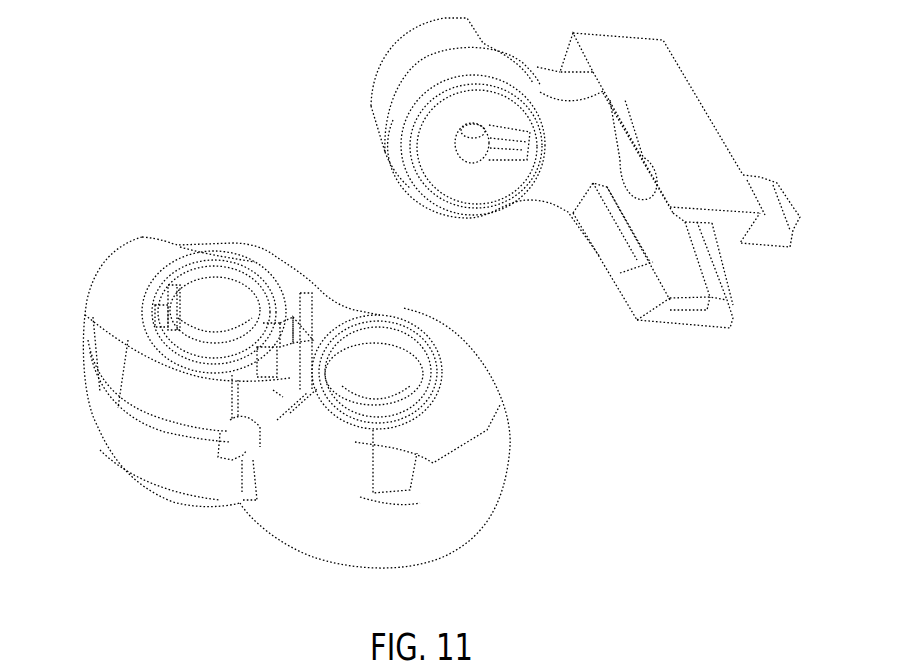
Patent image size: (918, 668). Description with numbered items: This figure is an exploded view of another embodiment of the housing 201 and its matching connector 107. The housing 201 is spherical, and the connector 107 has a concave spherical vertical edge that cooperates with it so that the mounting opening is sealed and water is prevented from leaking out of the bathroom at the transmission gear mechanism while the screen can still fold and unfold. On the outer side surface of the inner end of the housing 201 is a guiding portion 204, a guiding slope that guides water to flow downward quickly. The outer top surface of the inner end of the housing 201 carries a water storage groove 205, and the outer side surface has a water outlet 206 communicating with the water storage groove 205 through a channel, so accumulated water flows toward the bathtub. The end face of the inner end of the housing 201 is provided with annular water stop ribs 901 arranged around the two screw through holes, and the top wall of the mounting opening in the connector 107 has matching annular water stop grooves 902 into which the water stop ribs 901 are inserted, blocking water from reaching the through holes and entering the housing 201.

The connector 107 is at (660, 90).
The water stop groove 902 is at (410, 150).
The housing 201 is at (480, 483).
The guiding portion 204 is at (110, 370).
The water storage groove 205 is at (297, 356).
The water outlet 206 is at (243, 437).
The water stop rib 901 is at (372, 427).